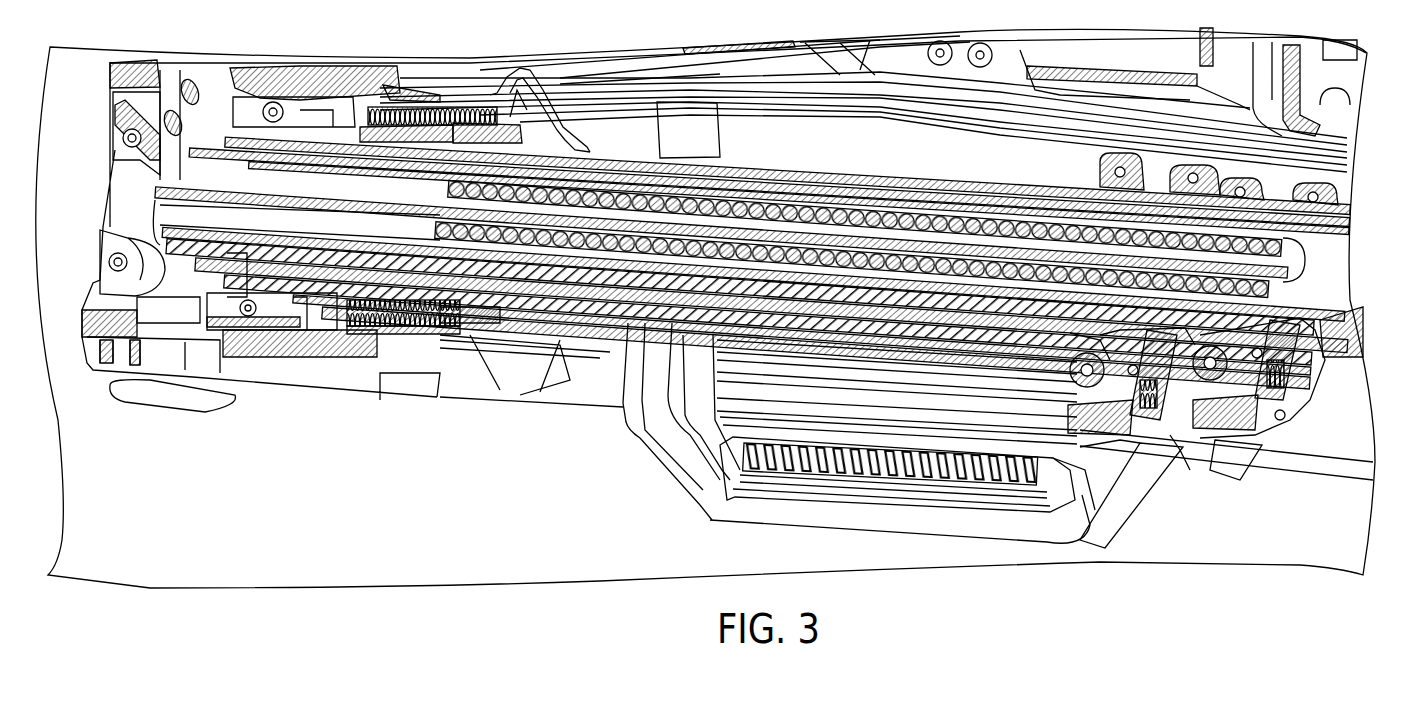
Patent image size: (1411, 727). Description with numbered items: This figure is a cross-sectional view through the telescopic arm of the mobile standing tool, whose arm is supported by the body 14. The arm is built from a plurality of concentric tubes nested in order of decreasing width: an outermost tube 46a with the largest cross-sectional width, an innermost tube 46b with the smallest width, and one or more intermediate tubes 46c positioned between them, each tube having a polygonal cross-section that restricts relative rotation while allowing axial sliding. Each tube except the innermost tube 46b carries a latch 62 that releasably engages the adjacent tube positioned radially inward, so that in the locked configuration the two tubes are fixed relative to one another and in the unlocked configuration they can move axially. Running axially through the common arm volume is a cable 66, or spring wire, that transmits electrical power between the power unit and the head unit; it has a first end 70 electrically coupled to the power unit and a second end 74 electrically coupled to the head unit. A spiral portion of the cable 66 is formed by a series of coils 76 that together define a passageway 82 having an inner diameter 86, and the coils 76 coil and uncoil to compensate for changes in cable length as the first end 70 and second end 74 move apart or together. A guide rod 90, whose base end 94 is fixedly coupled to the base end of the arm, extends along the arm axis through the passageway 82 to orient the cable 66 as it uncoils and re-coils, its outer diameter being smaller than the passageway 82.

The body 14 is at (1303, 468).
The outermost tube 46a is at (588, 314).
The innermost tube 46b is at (800, 193).
The intermediate tube 46c is at (647, 313).
The latch 62 is at (1257, 437).
The cable 66 is at (440, 230).
The first end 70 is at (170, 213).
The second end 74 is at (1357, 298).
The coils 76 is at (962, 220).
The passageway 82 is at (884, 262).
The inner diameter 86 is at (1028, 227).
The guide rod 90 is at (347, 207).
The base end 94 is at (150, 178).